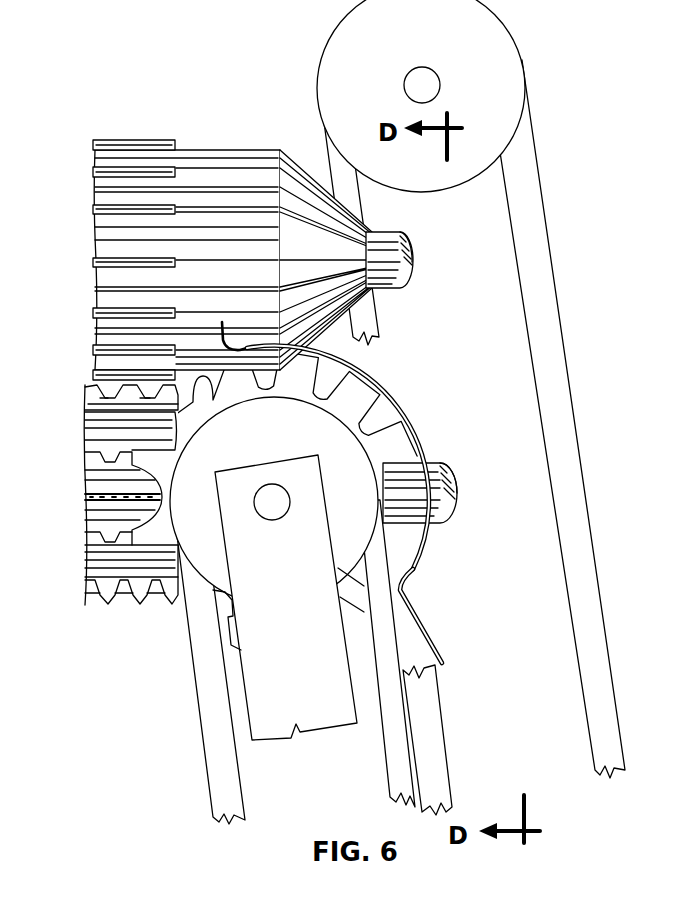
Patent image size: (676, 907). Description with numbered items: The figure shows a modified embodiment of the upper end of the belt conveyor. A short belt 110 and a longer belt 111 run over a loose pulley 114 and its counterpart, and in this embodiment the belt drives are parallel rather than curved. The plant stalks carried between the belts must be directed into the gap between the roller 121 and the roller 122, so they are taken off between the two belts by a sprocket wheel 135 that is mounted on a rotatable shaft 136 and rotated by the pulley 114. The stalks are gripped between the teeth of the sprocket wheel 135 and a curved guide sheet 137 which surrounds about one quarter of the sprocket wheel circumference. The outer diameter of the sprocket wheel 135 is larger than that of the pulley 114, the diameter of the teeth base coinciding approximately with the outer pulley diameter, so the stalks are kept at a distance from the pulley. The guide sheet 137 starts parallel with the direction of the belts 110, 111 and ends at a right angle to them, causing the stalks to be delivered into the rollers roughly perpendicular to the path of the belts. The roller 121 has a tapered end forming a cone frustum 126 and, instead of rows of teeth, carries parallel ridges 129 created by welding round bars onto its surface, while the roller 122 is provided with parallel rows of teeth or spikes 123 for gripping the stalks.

The short belt 110 is at (393, 728).
The longer belt 111 is at (596, 718).
The loose pulley 114 is at (500, 55).
The roller 121 is at (205, 167).
The roller 122 is at (97, 511).
The teeth or spikes 123 is at (112, 606).
The cone frustum 126 is at (293, 185).
The parallel ridges 129 is at (130, 140).
The sprocket wheel 135 is at (372, 397).
The rotatable shaft 136 is at (273, 512).
The curved guide sheet 137 is at (418, 565).